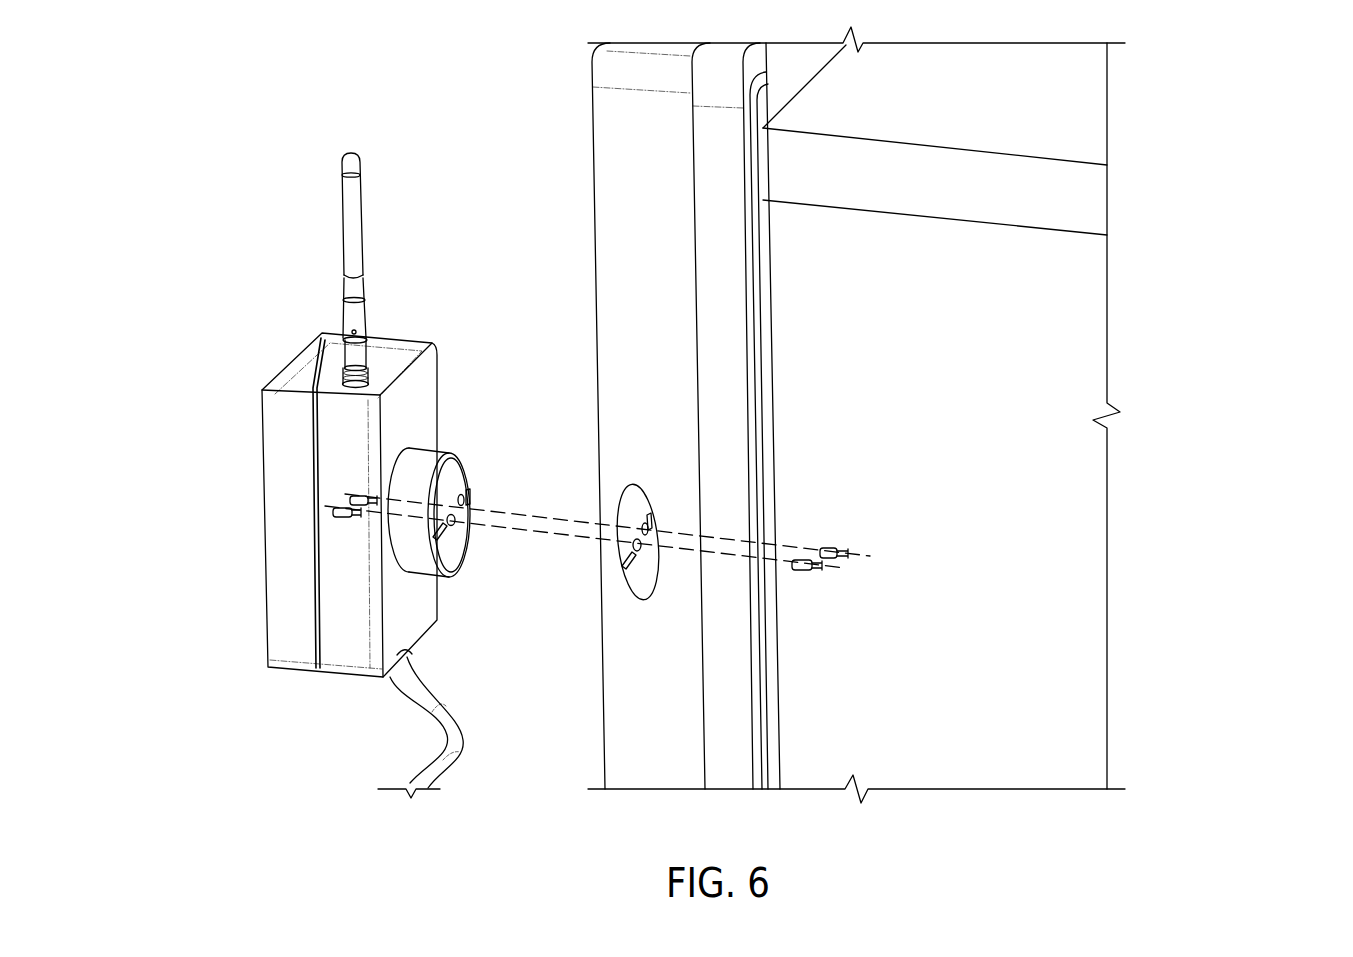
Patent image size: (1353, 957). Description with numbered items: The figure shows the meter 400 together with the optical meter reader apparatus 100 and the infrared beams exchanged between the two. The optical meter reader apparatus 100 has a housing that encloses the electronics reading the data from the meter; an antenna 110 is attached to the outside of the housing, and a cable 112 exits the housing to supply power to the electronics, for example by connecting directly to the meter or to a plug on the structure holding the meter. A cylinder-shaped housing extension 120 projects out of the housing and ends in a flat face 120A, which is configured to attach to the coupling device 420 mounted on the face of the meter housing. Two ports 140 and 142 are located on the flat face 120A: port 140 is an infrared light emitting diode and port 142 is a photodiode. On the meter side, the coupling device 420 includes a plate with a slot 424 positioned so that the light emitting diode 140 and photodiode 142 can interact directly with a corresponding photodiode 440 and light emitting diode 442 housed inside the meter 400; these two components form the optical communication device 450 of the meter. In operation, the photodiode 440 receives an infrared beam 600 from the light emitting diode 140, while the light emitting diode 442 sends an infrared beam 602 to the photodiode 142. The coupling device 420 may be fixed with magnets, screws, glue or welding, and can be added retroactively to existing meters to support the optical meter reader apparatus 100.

The optical meter reader apparatus 100 is at (328, 475).
The antenna 110 is at (345, 227).
The cable 112 is at (453, 725).
The housing extension 120 is at (464, 449).
The flat face 120A is at (458, 477).
The port (infrared light emitting diode) 140 is at (458, 528).
The port (photodiode) 142 is at (468, 498).
The meter 400 is at (1240, 111).
The coupling device 420 is at (643, 505).
The slot 424 is at (643, 548).
The photodiode 440 is at (797, 572).
The light emitting diode 442 is at (828, 548).
The optical communication device 450 is at (856, 549).
The infrared beam 600 is at (565, 540).
The infrared beam 602 is at (570, 523).